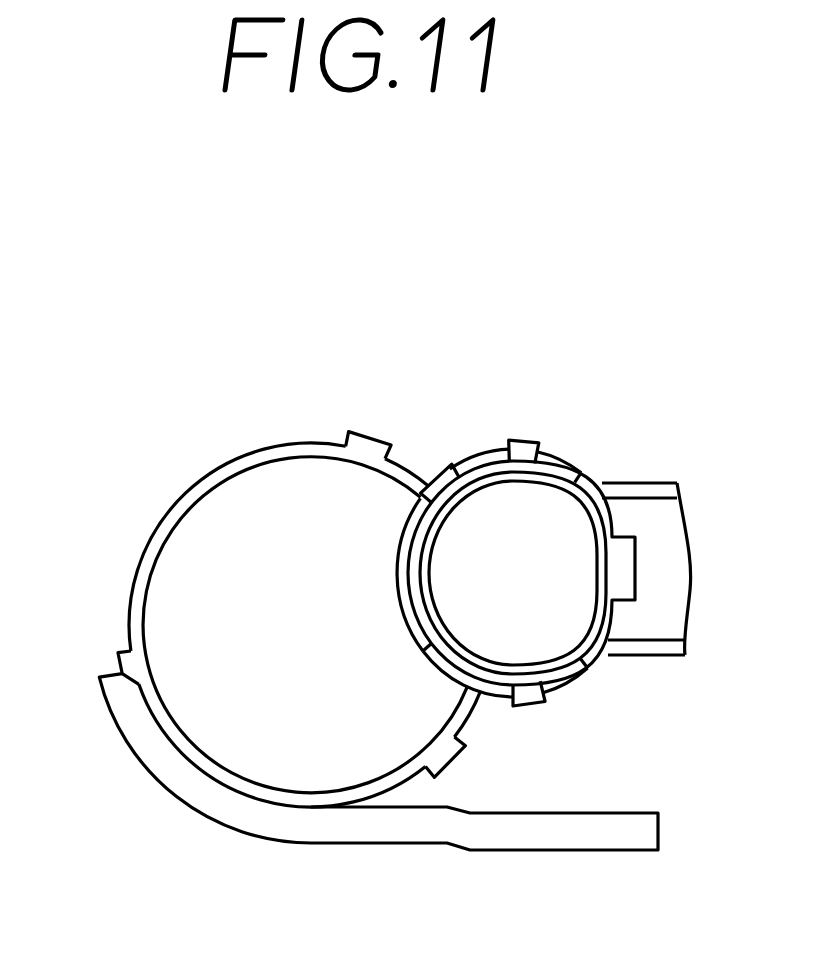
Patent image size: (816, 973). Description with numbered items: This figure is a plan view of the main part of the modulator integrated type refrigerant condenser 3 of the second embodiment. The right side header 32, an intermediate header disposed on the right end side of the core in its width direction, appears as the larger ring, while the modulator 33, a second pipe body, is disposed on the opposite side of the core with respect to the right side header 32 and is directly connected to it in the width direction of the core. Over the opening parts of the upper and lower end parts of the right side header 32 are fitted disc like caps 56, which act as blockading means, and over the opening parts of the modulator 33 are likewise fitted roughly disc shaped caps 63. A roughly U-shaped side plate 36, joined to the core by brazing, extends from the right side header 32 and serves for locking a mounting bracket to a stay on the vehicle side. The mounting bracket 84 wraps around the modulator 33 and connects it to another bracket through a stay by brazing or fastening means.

The modulator integrated type refrigerant condenser 3 is at (225, 373).
The right side header 32 is at (472, 456).
The modulator 33 is at (165, 510).
The side plate 36 is at (645, 513).
The disc like cap 56 is at (528, 517).
The cap 63 is at (317, 492).
The mounting bracket 84 is at (352, 827).